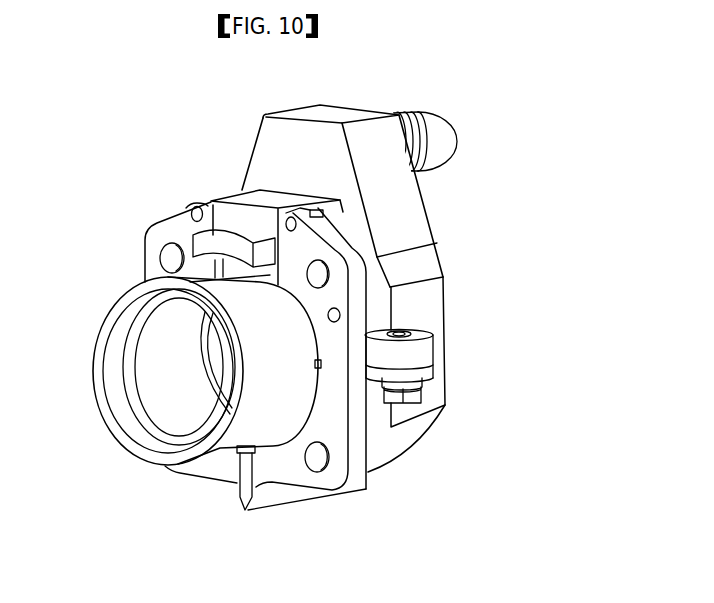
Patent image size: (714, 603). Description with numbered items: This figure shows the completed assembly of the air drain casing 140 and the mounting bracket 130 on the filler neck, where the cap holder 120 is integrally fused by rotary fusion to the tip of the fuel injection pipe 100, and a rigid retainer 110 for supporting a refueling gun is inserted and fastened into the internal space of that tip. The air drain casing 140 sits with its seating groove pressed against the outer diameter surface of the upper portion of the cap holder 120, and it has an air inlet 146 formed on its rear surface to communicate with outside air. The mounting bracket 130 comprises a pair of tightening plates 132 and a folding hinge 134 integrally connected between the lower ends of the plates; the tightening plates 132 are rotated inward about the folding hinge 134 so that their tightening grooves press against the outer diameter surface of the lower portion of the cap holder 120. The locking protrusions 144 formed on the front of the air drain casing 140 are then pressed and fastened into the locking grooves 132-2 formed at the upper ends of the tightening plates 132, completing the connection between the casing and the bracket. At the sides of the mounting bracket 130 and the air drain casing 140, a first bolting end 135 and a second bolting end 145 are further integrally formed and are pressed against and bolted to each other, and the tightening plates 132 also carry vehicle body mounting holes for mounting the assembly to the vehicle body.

The fuel injection pipe 100 is at (437, 258).
The rigid retainer 110 is at (211, 363).
The cap holder 120 is at (112, 313).
The mounting bracket 130 is at (371, 482).
The tightening plates 132 is at (335, 418).
The locking groove 132-2 is at (195, 208).
The folding hinge 134 is at (247, 511).
The first bolting end 135 is at (424, 372).
The air drain casing 140 is at (427, 201).
The locking protrusions 144 is at (199, 204).
The second bolting end 145 is at (424, 350).
The air inlet 146 is at (457, 132).